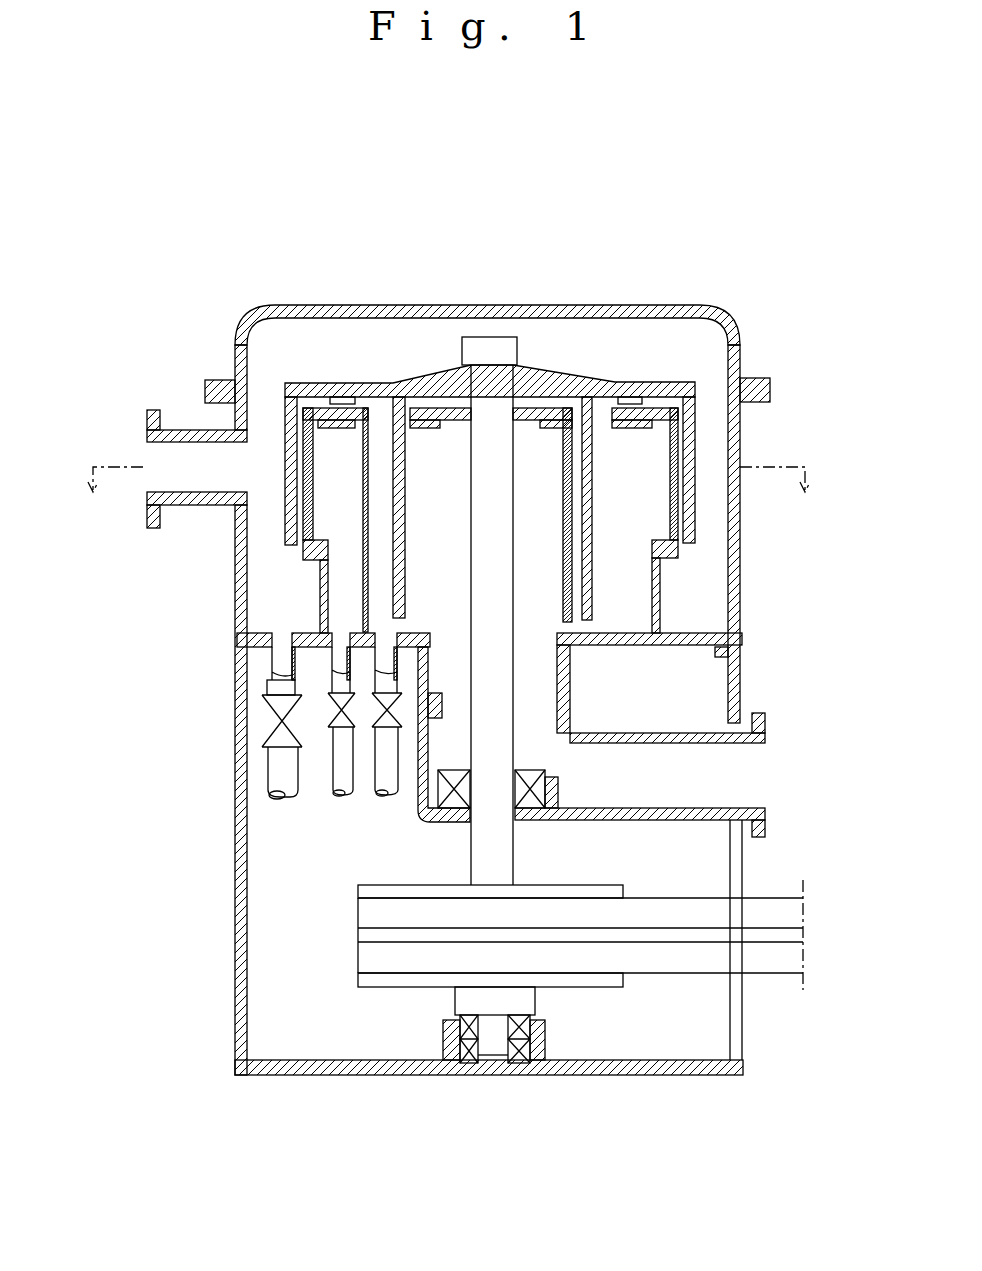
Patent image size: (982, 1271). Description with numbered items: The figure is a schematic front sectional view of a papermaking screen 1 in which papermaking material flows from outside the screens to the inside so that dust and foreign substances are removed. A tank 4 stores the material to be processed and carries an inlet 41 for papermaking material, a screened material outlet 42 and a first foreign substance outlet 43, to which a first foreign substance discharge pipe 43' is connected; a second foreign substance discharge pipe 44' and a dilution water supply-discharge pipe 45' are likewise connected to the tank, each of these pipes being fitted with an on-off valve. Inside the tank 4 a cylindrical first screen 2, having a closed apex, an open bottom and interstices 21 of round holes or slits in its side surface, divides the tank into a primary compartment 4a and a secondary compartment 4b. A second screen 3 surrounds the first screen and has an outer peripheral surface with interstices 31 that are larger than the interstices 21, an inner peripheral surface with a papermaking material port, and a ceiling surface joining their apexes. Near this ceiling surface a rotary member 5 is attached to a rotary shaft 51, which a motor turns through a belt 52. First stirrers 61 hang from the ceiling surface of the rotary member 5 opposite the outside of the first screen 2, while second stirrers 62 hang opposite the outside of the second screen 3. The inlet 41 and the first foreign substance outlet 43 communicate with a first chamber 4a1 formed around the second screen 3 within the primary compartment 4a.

The papermaking screen 1 is at (500, 279).
The first screen 2 is at (422, 595).
The second screen 3 is at (318, 597).
The tank 4 is at (668, 305).
The primary compartment 4a is at (333, 370).
The secondary compartment 4b is at (462, 546).
The first chamber 4a1 is at (258, 602).
The rotary member 5 is at (582, 385).
The interstices 21 is at (417, 442).
The interstices 31 is at (308, 437).
The inlet 41 is at (217, 475).
The screened material outlet 42 is at (742, 767).
The first foreign substance outlet 43 is at (236, 697).
The first foreign substance discharge pipe 43' is at (231, 794).
The second foreign substance discharge pipe 44' is at (356, 785).
The dilution water supply-discharge pipe 45' is at (305, 771).
The rotary shaft 51 is at (482, 848).
The belt 52 is at (757, 913).
The first stirrers 61 is at (400, 463).
The second stirrers 62 is at (293, 512).